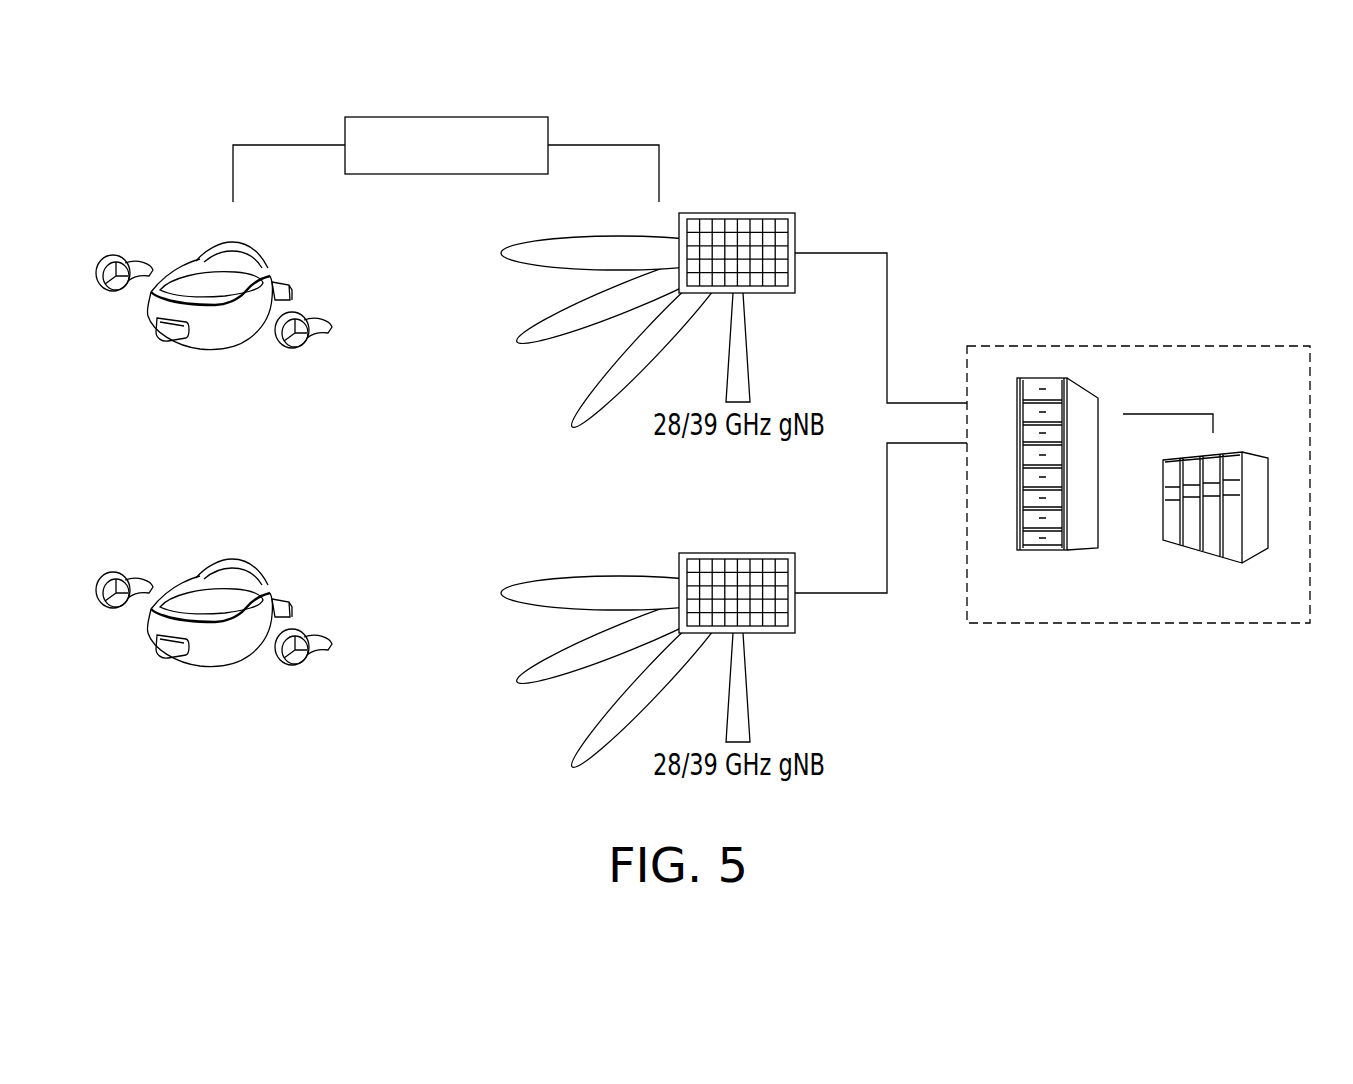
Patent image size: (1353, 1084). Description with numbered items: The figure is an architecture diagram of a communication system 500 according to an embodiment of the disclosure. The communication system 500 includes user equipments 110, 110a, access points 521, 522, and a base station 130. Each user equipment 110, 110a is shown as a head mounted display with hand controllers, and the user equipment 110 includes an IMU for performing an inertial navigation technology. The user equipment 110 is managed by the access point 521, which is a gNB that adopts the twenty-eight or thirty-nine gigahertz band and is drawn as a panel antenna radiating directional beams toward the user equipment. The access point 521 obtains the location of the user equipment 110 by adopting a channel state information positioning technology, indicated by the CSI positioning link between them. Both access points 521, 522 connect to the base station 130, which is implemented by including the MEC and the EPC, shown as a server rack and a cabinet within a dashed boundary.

The communication system 500 is at (385, 778).
The user equipment 110 is at (217, 242).
The user equipment 110a is at (217, 559).
The access point 521 is at (775, 197).
The access point 522 is at (775, 537).
The base station 130 is at (1022, 345).